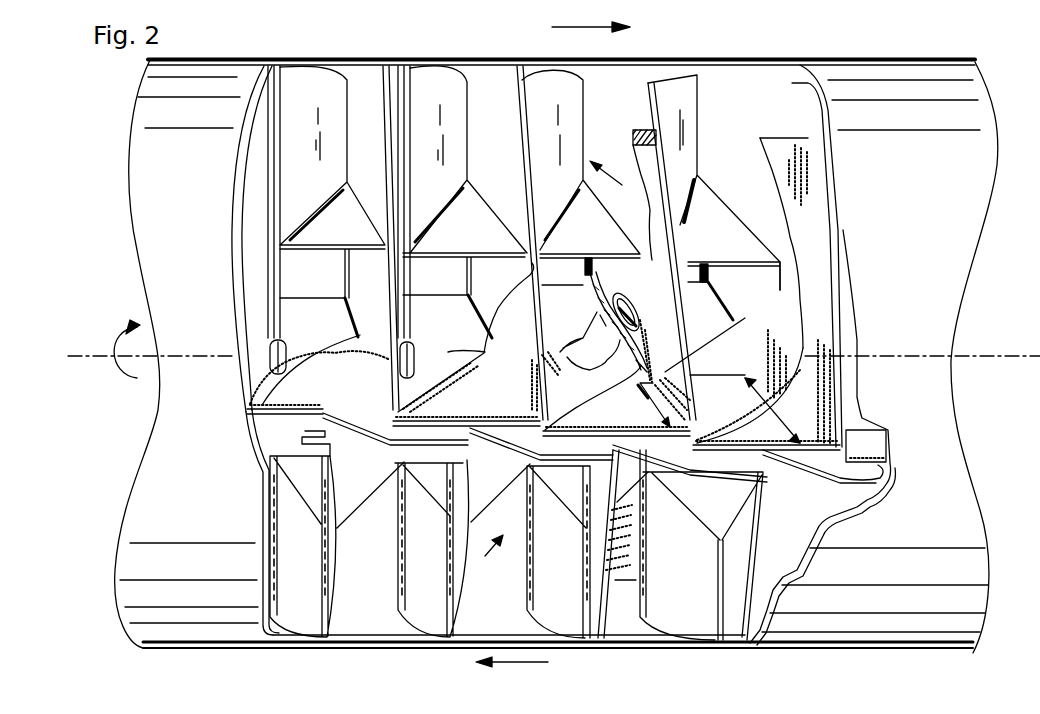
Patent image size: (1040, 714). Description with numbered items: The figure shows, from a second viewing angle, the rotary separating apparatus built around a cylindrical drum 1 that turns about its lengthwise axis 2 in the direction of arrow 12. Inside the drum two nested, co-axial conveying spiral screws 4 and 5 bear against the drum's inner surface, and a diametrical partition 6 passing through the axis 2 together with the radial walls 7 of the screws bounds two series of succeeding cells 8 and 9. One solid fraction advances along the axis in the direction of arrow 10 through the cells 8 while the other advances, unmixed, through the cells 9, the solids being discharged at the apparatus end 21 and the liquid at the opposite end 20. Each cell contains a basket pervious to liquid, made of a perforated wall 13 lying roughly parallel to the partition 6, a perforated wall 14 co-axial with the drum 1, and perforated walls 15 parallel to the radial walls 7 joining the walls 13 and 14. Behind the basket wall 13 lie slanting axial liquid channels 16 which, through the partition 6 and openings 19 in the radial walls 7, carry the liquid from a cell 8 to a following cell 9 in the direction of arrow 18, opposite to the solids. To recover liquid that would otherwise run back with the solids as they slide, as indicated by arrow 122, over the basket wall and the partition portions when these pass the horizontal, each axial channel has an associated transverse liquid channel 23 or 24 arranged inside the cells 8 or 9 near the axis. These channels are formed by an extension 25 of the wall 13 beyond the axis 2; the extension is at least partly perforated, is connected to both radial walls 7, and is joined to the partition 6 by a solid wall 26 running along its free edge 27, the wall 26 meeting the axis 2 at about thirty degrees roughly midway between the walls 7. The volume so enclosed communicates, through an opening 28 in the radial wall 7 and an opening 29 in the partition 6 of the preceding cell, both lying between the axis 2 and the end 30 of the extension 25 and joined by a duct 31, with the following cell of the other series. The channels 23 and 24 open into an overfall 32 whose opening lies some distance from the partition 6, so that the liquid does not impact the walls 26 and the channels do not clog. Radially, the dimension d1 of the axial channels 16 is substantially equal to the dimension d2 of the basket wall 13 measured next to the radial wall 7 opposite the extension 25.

The cylindrical drum 1 is at (935, 578).
The lengthwise axis 2 is at (973, 357).
The conveying spiral screw 4 is at (615, 182).
The conveying spiral screw 5 is at (486, 557).
The partition 6 is at (307, 422).
The radial walls 7 is at (648, 117).
The cells 8 is at (377, 150).
The cells 9 is at (367, 628).
The arrow 10 is at (548, 662).
The arrow 12 is at (115, 370).
The perforated wall 13 is at (320, 398).
The perforated wall 14 is at (782, 153).
The perforated walls 15 is at (790, 283).
The axial channel 16 is at (430, 440).
The arrow 18 is at (568, 27).
The openings 19 is at (688, 490).
The drum section 20 is at (1023, 315).
The apparatus end 21 is at (112, 453).
The liquid channel 23 is at (594, 320).
The liquid channel 24 is at (293, 339).
The extension 25 is at (714, 332).
The solid wall 26 is at (560, 343).
The free edge 27 is at (721, 293).
The opening 28 is at (643, 360).
The opening 29 is at (623, 333).
The end 30 is at (618, 317).
The duct 31 is at (270, 337).
The overfall 32 is at (270, 362).
The arrow 122 is at (700, 327).
The dimension d1 is at (640, 415).
The dimension d2 is at (776, 418).